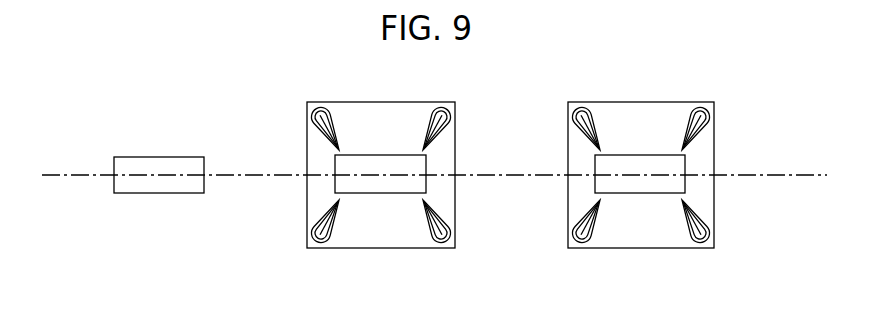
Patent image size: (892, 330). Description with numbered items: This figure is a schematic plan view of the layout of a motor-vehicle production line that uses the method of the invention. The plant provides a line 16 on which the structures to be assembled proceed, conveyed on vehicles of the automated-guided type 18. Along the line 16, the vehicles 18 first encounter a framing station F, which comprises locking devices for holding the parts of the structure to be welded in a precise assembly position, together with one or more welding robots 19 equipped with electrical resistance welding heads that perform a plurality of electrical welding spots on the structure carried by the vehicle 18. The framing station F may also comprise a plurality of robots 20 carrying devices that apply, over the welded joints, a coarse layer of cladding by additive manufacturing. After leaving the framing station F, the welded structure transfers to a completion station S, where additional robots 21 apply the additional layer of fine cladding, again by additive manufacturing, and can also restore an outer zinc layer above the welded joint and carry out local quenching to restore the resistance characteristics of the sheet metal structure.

The line 16 is at (60, 176).
The automated-guided vehicle 18 is at (131, 188).
The welding robot 19 is at (318, 246).
The robot 20 is at (323, 137).
The additional robot 21 is at (572, 143).
The framing station F is at (361, 96).
The completion station S is at (652, 96).